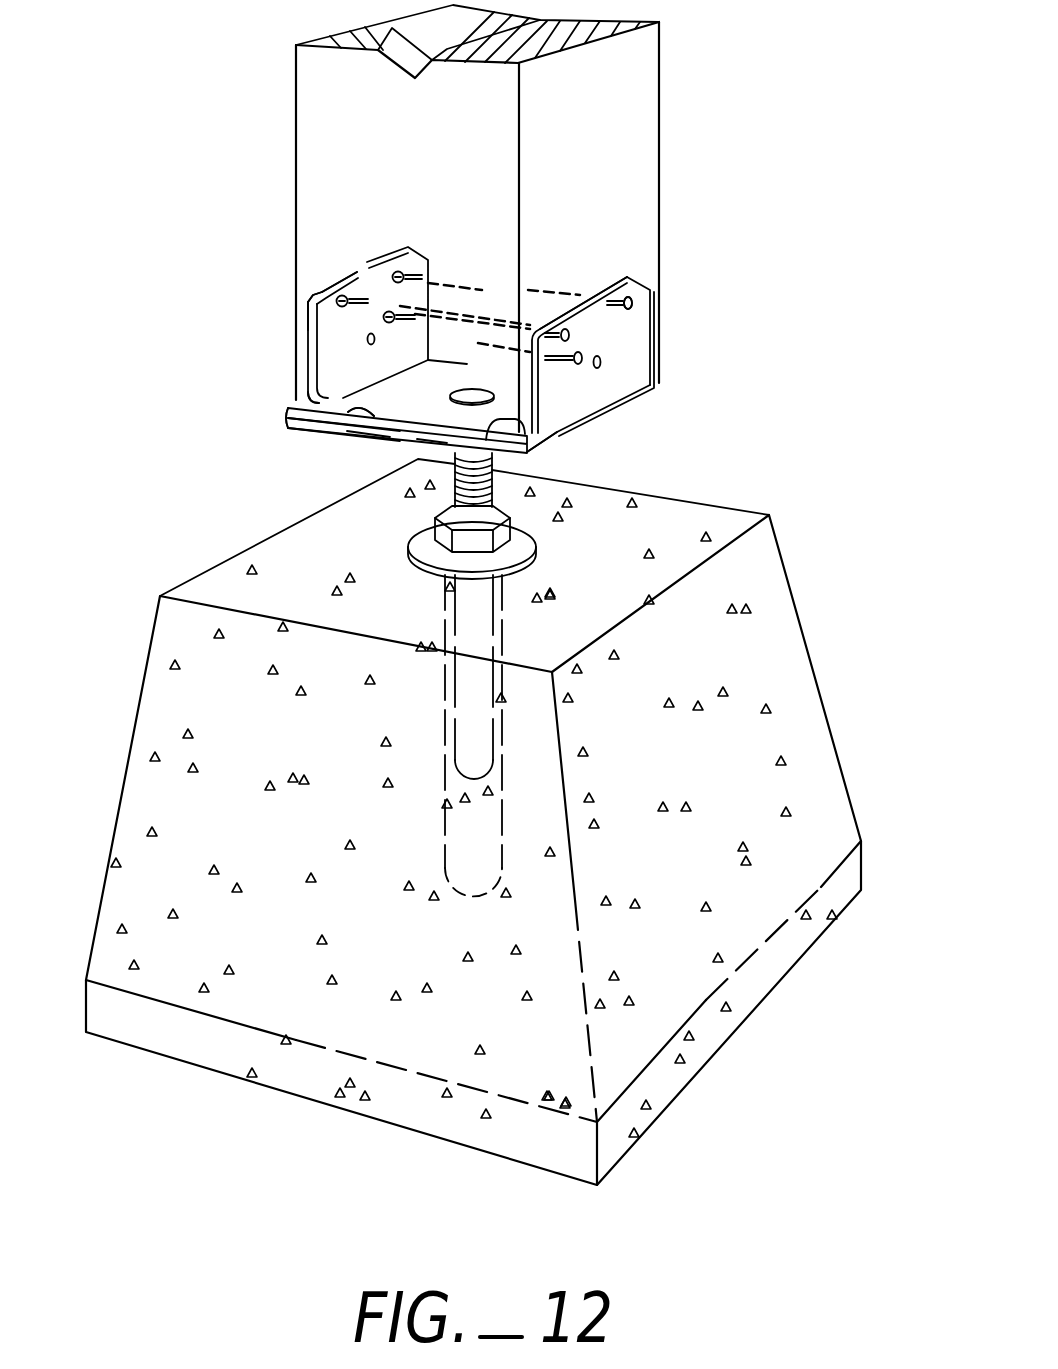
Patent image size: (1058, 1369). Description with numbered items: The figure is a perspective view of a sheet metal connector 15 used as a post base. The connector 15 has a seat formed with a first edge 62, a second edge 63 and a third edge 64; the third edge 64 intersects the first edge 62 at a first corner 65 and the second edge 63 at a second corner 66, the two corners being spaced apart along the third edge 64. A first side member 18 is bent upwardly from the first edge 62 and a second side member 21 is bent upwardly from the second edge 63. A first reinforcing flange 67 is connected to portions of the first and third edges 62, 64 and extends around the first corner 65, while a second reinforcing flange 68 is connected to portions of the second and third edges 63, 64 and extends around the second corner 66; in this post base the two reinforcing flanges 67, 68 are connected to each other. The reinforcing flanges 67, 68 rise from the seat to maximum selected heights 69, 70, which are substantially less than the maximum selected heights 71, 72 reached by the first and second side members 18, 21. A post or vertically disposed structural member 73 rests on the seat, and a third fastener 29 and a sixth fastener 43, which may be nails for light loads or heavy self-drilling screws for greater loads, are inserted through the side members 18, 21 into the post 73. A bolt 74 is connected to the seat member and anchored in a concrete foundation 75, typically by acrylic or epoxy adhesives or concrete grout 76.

The sheet metal connector 15 is at (463, 315).
The first side member 18 is at (640, 310).
The second side member 21 is at (312, 292).
The third fastener 29 is at (553, 280).
The sixth fastener 43 is at (452, 272).
The first edge 62 is at (640, 385).
The second edge 63 is at (352, 402).
The third edge 64 is at (395, 445).
The first corner 65 is at (540, 460).
The second corner 66 is at (285, 426).
The first reinforcing flange 67 is at (545, 443).
The second reinforcing flange 68 is at (325, 392).
The maximum selected height of first reinforcing flange 69 is at (435, 425).
The maximum selected height of second reinforcing flange 70 is at (332, 428).
The maximum selected height of first side member 71 is at (620, 277).
The maximum selected height of second side member 72 is at (337, 278).
The post or vertically disposed structural member 73 is at (659, 146).
The bolt 74 is at (490, 492).
The concrete foundation 75 is at (824, 689).
The concrete grout 76 is at (482, 823).